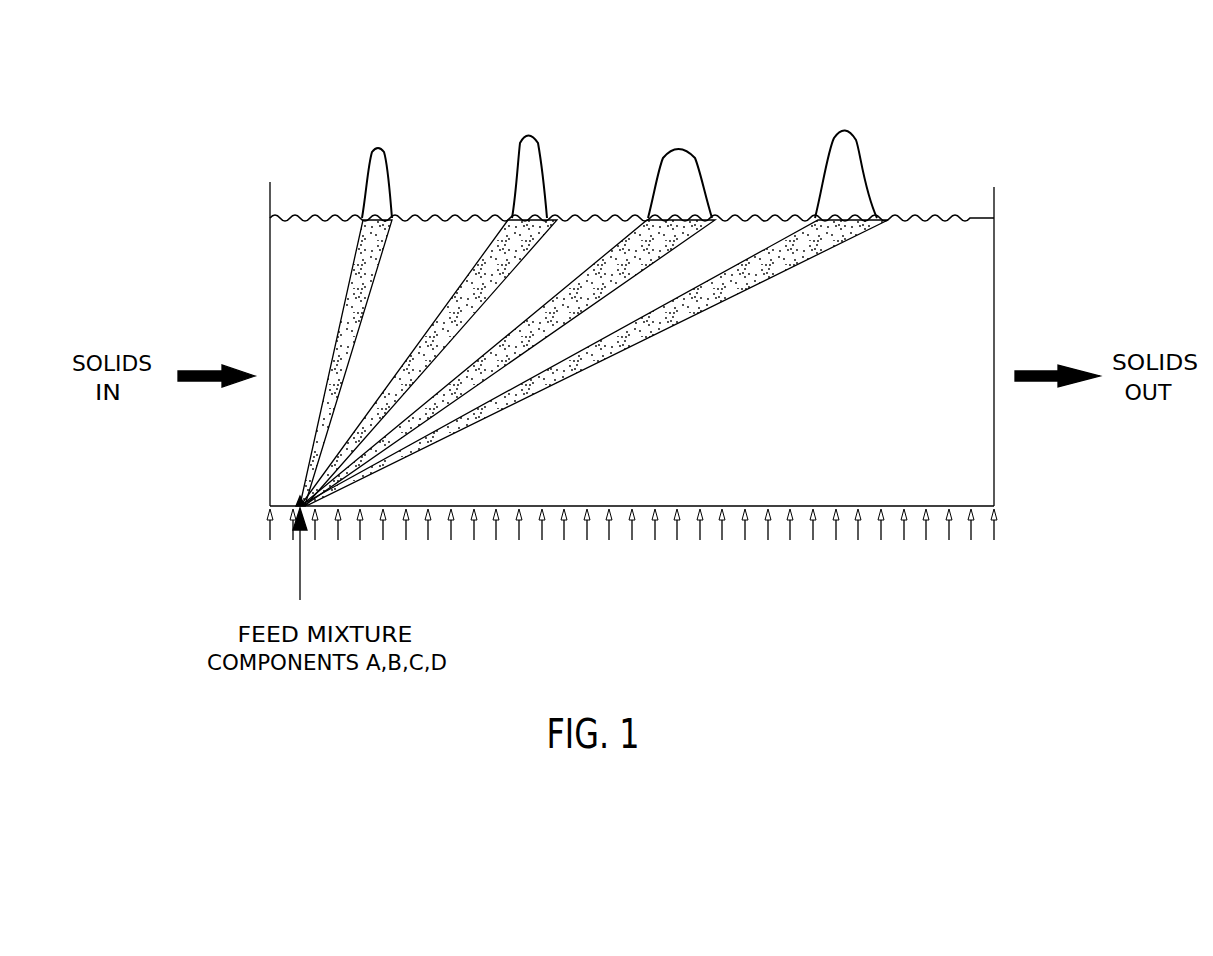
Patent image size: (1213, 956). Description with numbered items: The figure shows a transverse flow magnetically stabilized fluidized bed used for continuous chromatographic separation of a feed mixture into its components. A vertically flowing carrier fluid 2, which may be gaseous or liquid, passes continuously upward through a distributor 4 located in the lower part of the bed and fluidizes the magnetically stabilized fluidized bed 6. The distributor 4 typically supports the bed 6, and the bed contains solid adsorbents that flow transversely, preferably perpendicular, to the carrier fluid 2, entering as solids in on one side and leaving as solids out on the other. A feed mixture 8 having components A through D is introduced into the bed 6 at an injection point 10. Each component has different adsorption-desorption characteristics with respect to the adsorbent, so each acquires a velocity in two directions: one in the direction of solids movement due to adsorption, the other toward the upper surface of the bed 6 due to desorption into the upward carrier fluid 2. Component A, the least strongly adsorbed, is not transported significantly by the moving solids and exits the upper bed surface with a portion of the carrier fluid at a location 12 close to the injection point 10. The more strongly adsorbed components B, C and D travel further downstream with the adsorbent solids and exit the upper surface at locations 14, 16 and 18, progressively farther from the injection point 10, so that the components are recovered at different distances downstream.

The carrier fluid 2 is at (698, 540).
The distributor 4 is at (481, 505).
The magnetically stabilized fluidized bed 6 is at (797, 431).
The feed mixture 8 is at (300, 556).
The injection point 10 is at (298, 503).
The exit location of component A 12 is at (382, 148).
The exit location of component B 14 is at (540, 137).
The exit location of component C 16 is at (684, 148).
The exit location of component D 18 is at (849, 130).